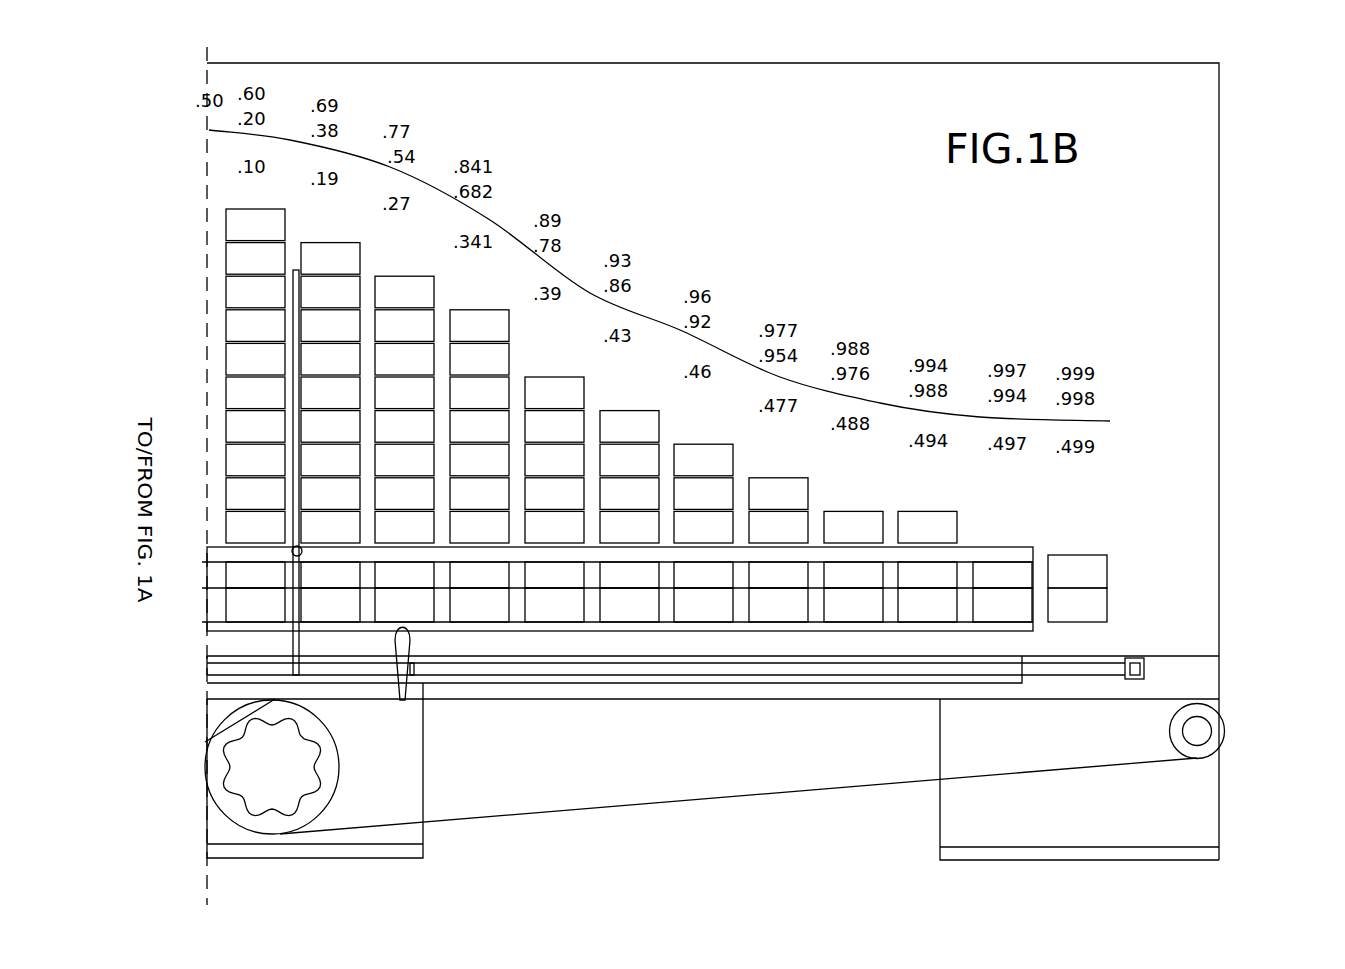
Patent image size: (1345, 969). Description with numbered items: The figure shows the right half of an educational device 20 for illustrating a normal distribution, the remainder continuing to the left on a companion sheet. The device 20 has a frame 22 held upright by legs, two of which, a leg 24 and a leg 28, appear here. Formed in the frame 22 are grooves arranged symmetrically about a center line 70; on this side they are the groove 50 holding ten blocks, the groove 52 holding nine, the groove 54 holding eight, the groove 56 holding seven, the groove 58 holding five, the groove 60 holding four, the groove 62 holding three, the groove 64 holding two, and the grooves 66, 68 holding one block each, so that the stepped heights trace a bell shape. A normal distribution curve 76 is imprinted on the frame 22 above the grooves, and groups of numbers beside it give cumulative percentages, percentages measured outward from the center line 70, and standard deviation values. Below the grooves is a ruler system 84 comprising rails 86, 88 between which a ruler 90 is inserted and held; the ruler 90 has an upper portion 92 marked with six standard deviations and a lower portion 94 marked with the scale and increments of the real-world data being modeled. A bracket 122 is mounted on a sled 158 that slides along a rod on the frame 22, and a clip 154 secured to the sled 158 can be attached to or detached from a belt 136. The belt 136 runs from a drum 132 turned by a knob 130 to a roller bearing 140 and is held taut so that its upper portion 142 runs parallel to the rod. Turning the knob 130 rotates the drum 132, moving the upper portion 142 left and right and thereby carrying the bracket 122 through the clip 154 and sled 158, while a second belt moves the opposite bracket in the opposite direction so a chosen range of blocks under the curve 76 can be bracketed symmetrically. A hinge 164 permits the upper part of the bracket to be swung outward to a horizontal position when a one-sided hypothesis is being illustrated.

The educational device 20 is at (1228, 134).
The frame 22 is at (1198, 200).
The leg 24 is at (392, 793).
The leg 28 is at (1193, 813).
The groove 50 is at (260, 208).
The groove 52 is at (320, 242).
The groove 54 is at (403, 276).
The groove 56 is at (463, 309).
The groove 58 is at (543, 377).
The groove 60 is at (615, 410).
The groove 62 is at (688, 444).
The groove 64 is at (777, 477).
The groove 66 is at (850, 511).
The groove 68 is at (923, 511).
The center line 70 is at (206, 878).
The normal distribution curve 76 is at (417, 178).
The ruler system 84 is at (1117, 515).
The rail 86 is at (963, 553).
The rail 88 is at (980, 625).
The ruler 90 is at (1105, 577).
The upper portion 92 is at (1115, 565).
The lower portion 94 is at (1118, 605).
The bracket 122 is at (291, 270).
The knob 130 is at (297, 733).
The drum 132 is at (330, 775).
The belt 136 is at (698, 700).
The roller bearing 140 is at (1177, 731).
The upper portion 142 is at (807, 700).
The clip 154 is at (420, 640).
The sled 158 is at (315, 668).
The hinge 164 is at (302, 551).